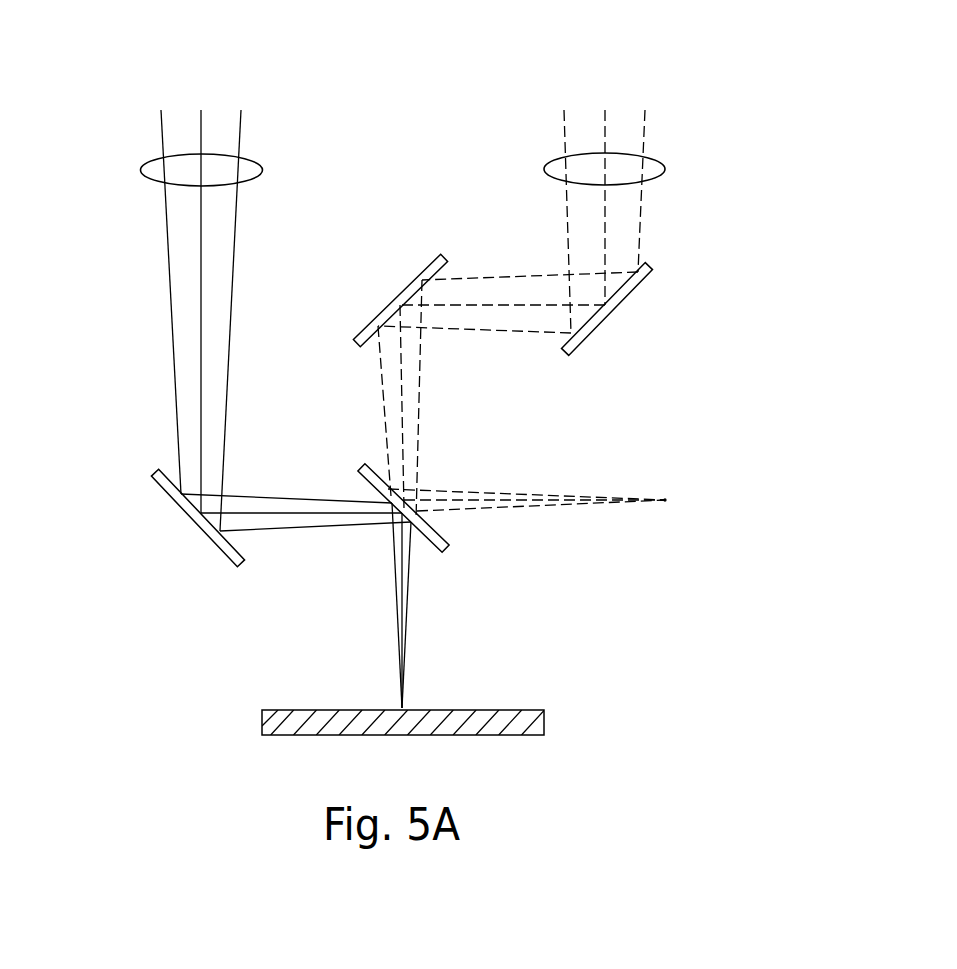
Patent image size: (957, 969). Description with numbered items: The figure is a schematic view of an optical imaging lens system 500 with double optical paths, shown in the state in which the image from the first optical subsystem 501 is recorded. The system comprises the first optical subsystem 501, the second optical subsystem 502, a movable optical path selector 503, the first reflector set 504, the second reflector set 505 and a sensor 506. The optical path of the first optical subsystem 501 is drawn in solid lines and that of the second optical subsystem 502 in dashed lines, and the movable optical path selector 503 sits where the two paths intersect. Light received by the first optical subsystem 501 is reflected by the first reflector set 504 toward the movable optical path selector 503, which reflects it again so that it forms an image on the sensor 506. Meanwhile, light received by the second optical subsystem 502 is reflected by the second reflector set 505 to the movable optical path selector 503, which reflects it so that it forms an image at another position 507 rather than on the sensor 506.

The optical imaging lens system with double optical paths 500 is at (519, 387).
The first optical subsystem 501 is at (263, 170).
The second optical subsystem 502 is at (665, 169).
The movable optical path selector 503 is at (446, 551).
The first reflector set 504 is at (195, 522).
The second reflector set 505 is at (445, 258).
The sensor 506 is at (544, 722).
The another position 507 is at (665, 500).